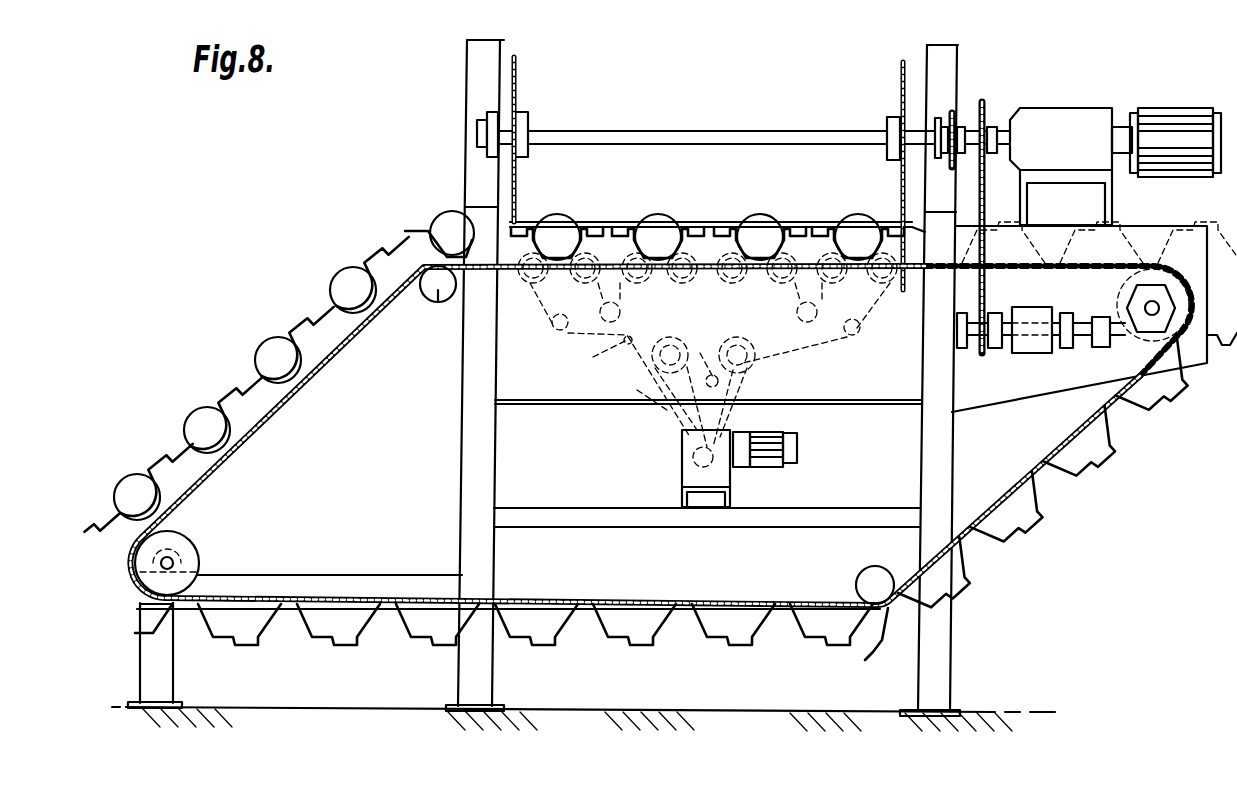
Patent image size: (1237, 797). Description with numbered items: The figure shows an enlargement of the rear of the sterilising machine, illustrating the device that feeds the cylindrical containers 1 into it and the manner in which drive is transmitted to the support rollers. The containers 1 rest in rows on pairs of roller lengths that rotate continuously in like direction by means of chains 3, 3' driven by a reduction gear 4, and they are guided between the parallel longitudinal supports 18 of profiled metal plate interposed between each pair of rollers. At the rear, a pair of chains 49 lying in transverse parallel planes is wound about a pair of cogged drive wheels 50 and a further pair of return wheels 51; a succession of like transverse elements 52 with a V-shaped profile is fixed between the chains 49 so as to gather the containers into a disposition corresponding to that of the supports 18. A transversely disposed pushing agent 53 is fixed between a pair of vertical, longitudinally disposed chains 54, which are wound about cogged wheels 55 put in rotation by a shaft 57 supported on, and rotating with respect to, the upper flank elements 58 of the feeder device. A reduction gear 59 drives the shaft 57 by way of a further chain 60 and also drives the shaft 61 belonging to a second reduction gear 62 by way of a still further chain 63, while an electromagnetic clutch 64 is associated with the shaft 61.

The cylindrical containers 1 is at (270, 350).
The chains 3 is at (612, 365).
The chains 3' is at (791, 375).
The reduction gear 4 is at (773, 464).
The parallel longitudinal supports 18 is at (356, 156).
The pair of chains 49 is at (280, 418).
The cogged drive wheels 50 is at (1140, 233).
The return wheels 51 is at (190, 548).
The transverse elements 52 is at (367, 287).
The pushing agent 53 is at (715, 220).
The chains 54 is at (517, 72).
The cogged wheels 55 is at (528, 121).
The shaft 57 is at (640, 134).
The upper flank elements 58 is at (497, 80).
The reduction gear 59 is at (1167, 123).
The chain 60 is at (952, 112).
The shaft 61 is at (1008, 332).
The reduction gear 62 is at (1175, 333).
The chain 63 is at (988, 187).
The electromagnetic clutch 64 is at (1033, 350).